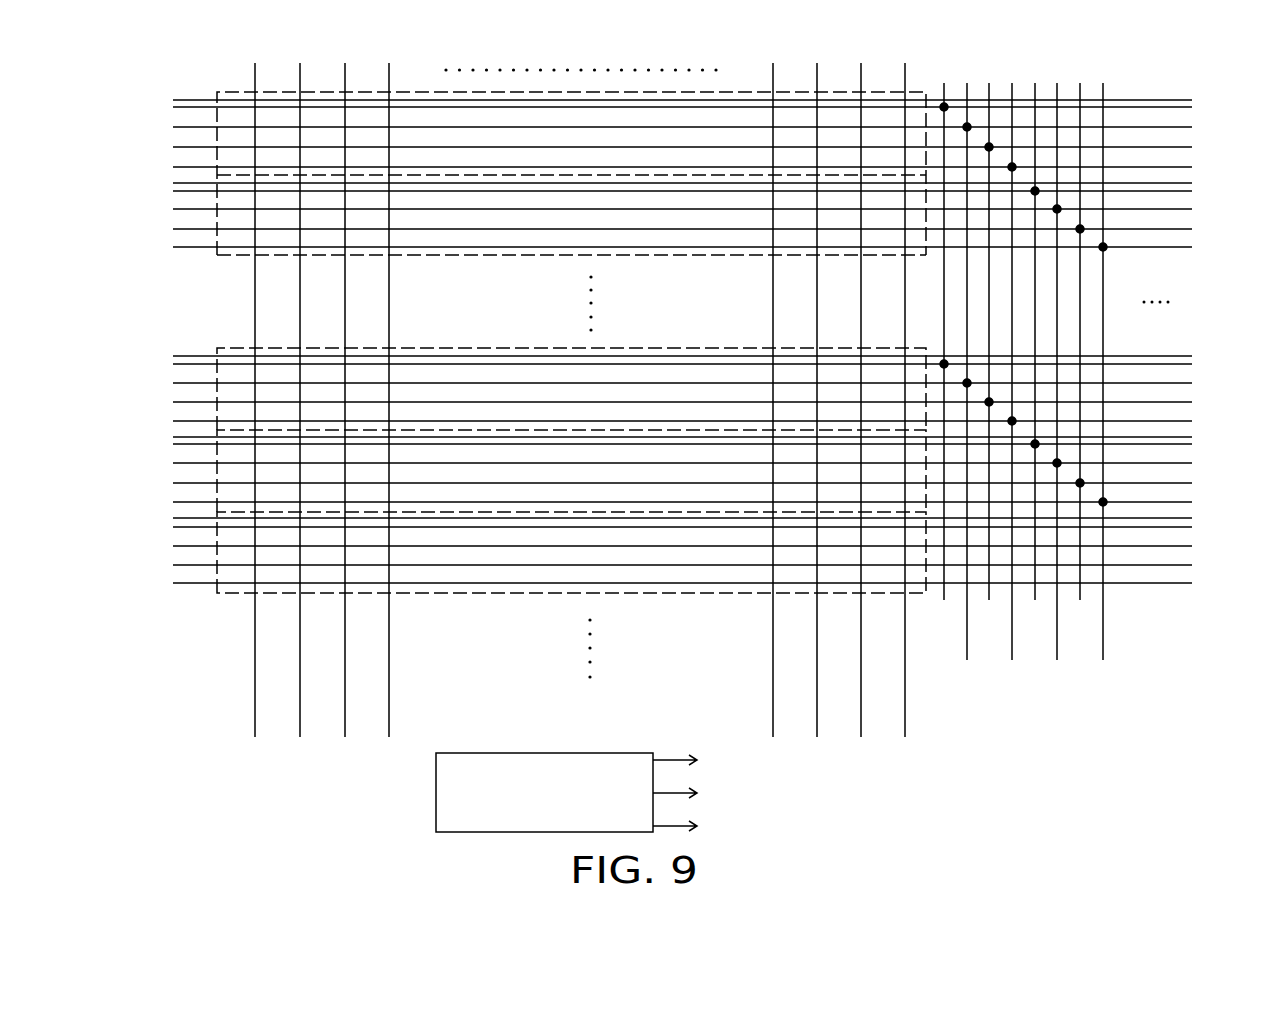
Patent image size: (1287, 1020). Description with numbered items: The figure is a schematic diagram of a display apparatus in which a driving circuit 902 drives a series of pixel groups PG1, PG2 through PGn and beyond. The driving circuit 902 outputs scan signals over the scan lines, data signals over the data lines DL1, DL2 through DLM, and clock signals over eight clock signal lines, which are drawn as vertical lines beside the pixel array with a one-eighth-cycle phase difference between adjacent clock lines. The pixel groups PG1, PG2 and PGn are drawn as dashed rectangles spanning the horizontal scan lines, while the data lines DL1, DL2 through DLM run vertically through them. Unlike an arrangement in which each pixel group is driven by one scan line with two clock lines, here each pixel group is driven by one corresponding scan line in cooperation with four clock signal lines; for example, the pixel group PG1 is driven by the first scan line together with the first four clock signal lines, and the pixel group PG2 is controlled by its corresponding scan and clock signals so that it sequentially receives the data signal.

The driving circuit 902 is at (436, 792).
The pixel group PG1 is at (207, 93).
The pixel group PG2 is at (217, 252).
The pixel group PGn is at (213, 353).
The data line DL1 is at (254, 722).
The data line DL2 is at (300, 722).
The data line DLM is at (905, 720).